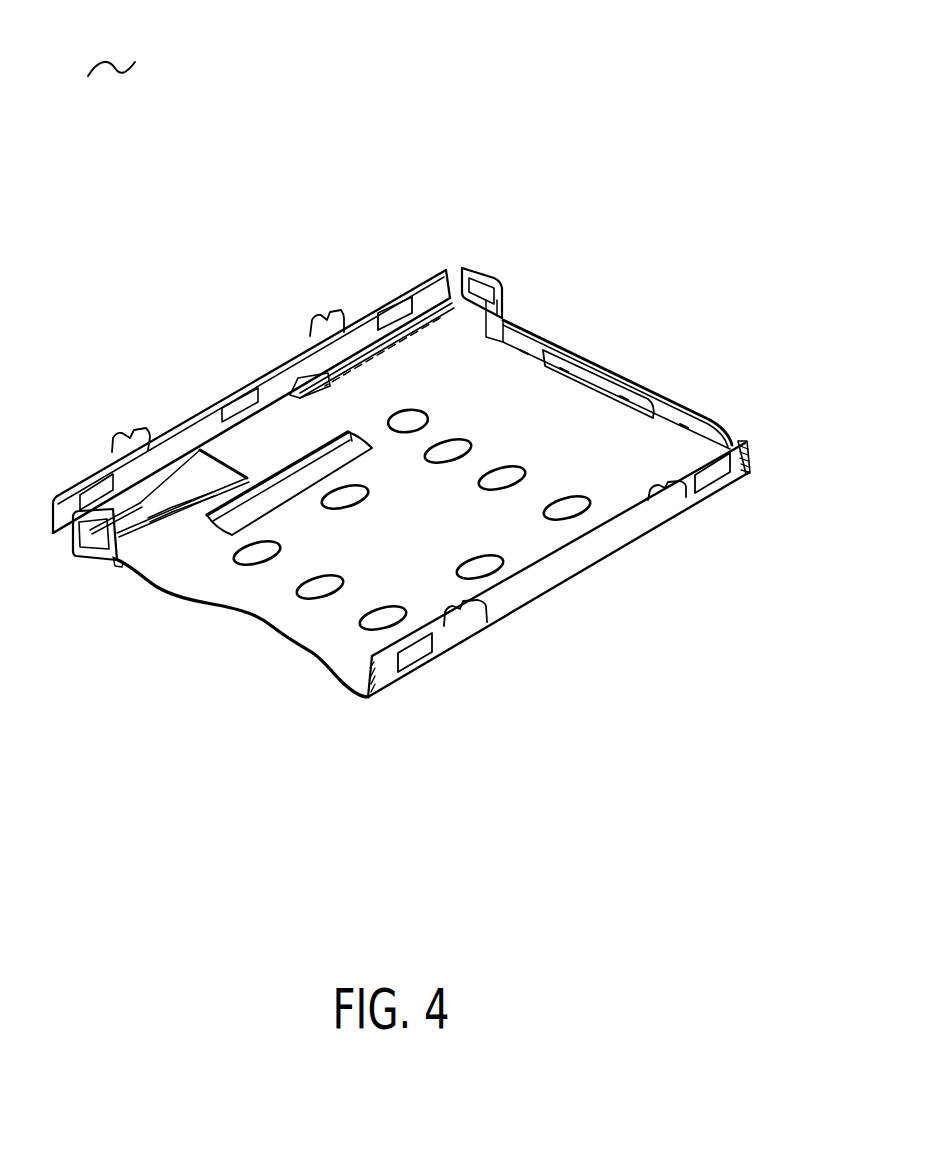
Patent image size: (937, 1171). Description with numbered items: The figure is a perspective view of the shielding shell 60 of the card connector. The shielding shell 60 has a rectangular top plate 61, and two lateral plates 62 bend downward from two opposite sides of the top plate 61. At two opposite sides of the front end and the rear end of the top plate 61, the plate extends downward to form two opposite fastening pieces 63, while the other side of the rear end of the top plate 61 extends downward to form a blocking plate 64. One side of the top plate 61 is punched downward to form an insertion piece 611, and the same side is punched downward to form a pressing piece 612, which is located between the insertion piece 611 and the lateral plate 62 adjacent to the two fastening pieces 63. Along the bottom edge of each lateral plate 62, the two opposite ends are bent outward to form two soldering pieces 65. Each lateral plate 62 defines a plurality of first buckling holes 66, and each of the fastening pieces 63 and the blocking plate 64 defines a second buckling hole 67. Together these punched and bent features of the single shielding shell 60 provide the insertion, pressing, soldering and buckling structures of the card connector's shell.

The shielding shell 60 is at (111, 48).
The top plate 61 is at (204, 573).
The insertion piece 611 is at (293, 465).
The pressing piece 612 is at (208, 472).
The lateral plate 62 is at (433, 283).
The fastening piece 63 is at (480, 270).
The blocking plate 64 is at (707, 422).
The soldering piece 65 is at (128, 438).
The first buckling hole 66 is at (393, 310).
The second buckling hole 67 is at (497, 290).